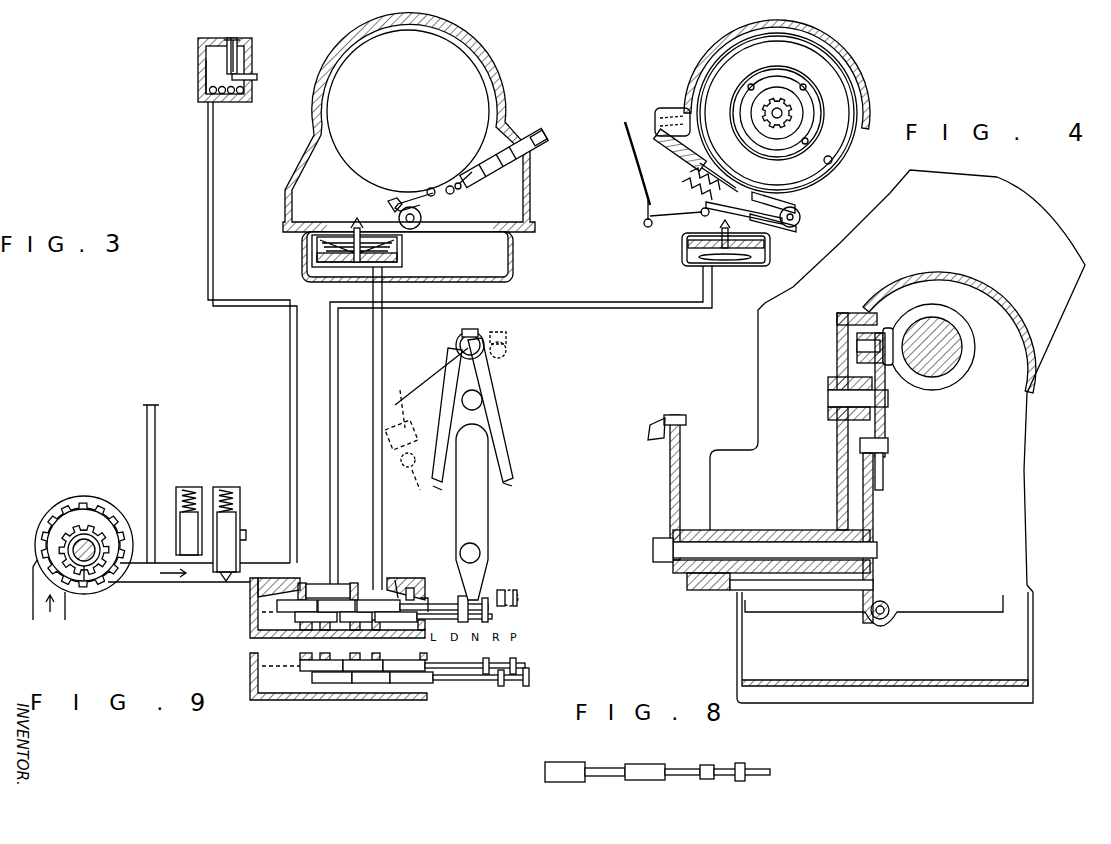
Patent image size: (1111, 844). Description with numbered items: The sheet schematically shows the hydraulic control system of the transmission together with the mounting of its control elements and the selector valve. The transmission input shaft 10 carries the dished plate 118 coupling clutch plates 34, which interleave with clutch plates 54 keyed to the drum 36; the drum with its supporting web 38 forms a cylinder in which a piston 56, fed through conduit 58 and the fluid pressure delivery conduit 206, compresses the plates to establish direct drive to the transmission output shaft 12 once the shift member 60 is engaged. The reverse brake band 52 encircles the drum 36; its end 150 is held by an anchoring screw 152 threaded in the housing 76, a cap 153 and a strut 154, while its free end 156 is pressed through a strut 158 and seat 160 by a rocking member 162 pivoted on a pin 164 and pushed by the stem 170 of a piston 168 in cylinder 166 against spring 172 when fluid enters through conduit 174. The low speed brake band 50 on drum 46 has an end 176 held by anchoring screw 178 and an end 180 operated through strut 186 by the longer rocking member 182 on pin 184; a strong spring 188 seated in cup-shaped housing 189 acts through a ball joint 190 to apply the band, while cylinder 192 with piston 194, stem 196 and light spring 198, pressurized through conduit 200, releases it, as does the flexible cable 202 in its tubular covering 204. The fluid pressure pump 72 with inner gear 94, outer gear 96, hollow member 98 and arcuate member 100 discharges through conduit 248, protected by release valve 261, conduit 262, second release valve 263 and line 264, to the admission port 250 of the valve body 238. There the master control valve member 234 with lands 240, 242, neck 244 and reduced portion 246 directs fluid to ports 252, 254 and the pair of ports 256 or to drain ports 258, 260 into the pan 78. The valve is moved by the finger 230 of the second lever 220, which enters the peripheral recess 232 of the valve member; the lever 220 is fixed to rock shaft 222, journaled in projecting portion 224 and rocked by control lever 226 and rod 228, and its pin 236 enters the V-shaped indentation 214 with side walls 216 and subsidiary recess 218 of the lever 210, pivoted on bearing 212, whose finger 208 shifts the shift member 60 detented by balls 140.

In FIG. 9, the transmission input shaft 10 is at (106, 572).
In FIG. 4, the transmission output shaft 12 is at (786, 108).
In FIG. 8, the transmission output shaft 12 is at (948, 336).
In FIG. 3, the clutch plates 34 is at (238, 68).
In FIG. 3, the drum 36 is at (236, 40).
In FIG. 3, the supporting web 38 is at (200, 86).
In FIG. 4, the drum 46 is at (832, 162).
In FIG. 4, the low speed brake band 50 is at (858, 150).
In FIG. 3, the reverse brake band 52 is at (478, 72).
In FIG. 3, the clutch plates 54 is at (238, 58).
In FIG. 3, the piston 56 is at (200, 62).
In FIG. 3, the conduit 58 is at (212, 102).
In FIG. 8, the shift member 60 is at (958, 376).
In FIG. 9, the fluid pressure pump 72 is at (85, 496).
In FIG. 3, the housing 76 is at (503, 98).
In FIG. 4, the housing 76 is at (703, 64).
In FIG. 8, the housing 76 is at (968, 280).
In FIG. 3, the pan 78 is at (514, 276).
In FIG. 8, the pan 78 is at (896, 702).
In FIG. 9, the inner externally toothed gear 94 is at (96, 530).
In FIG. 9, the outer internally toothed gear 96 is at (48, 524).
In FIG. 9, the hollow member 98 is at (84, 582).
In FIG. 9, the arcuate member 100 is at (70, 510).
In FIG. 3, the dished plate 118 is at (257, 80).
In FIG. 4, the balls 140 is at (770, 80).
In FIG. 3, the end of brake band 150 is at (450, 185).
In FIG. 3, the anchoring screw 152 is at (520, 142).
In FIG. 3, the cap 153 is at (474, 175).
In FIG. 3, the strut 154 is at (461, 190).
In FIG. 3, the free end of brake band 156 is at (429, 190).
In FIG. 3, the strut 158 is at (420, 203).
In FIG. 3, the seat 160 is at (390, 202).
In FIG. 3, the rocking member 162 is at (360, 224).
In FIG. 3, the pin 164 is at (411, 229).
In FIG. 3, the cylinder 166 is at (313, 262).
In FIG. 3, the piston 168 is at (398, 256).
In FIG. 3, the stem 170 is at (354, 262).
In FIG. 3, the spring 172 is at (330, 245).
In FIG. 3, the conduit 174 is at (384, 296).
In FIG. 4, the end of brake band 176 is at (730, 182).
In FIG. 4, the anchoring screw 178 is at (700, 156).
In FIG. 4, the end of brake band 180 is at (768, 200).
In FIG. 4, the rocking member 182 is at (772, 226).
In FIG. 4, the pin 184 is at (800, 217).
In FIG. 4, the strut 186 is at (766, 208).
In FIG. 4, the spring 188 is at (682, 188).
In FIG. 4, the cup-shaped housing 189 is at (668, 115).
In FIG. 4, the ball joint 190 is at (690, 214).
In FIG. 4, the cylinder 192 is at (740, 264).
In FIG. 4, the piston 194 is at (688, 242).
In FIG. 4, the stem 196 is at (722, 230).
In FIG. 4, the spring 198 is at (700, 256).
In FIG. 4, the conduit 200 is at (635, 308).
In FIG. 4, the flexible cable 202 is at (645, 206).
In FIG. 4, the tubular covering 204 is at (636, 152).
In FIG. 3, the fluid pressure delivery conduit 206 is at (208, 205).
In FIG. 8, the finger 208 is at (886, 328).
In FIG. 9, the finger 208 is at (508, 350).
In FIG. 8, the lever 210 is at (886, 428).
In FIG. 9, the lever 210 is at (494, 383).
In FIG. 8, the bearing 212 is at (890, 400).
In FIG. 9, the bearing 212 is at (484, 400).
In FIG. 9, the V-shaped indentation 214 is at (500, 480).
In FIG. 8, the side walls 216 is at (884, 476).
In FIG. 9, the side walls 216 is at (432, 490).
In FIG. 9, the subsidiary recess 218 is at (500, 432).
In FIG. 8, the second lever 220 is at (874, 516).
In FIG. 9, the second lever 220 is at (492, 535).
In FIG. 8, the rock shaft 222 is at (796, 548).
In FIG. 9, the rock shaft 222 is at (481, 553).
In FIG. 8, the projecting portion 224 is at (766, 532).
In FIG. 8, the control lever 226 is at (668, 470).
In FIG. 8, the rod 228 is at (660, 430).
In FIG. 8, the finger 230 is at (882, 588).
In FIG. 9, the finger 230 is at (518, 598).
In FIG. 9, the peripheral recess 232 is at (742, 782).
In FIG. 8, the master control valve member 234 is at (886, 618).
In FIG. 9, the master control valve member 234 is at (725, 757).
In FIG. 8, the pin 236 is at (890, 448).
In FIG. 9, the pin 236 is at (468, 466).
In FIG. 8, the valve body 238 is at (832, 604).
In FIG. 9, the valve body 238 is at (250, 638).
In FIG. 9, the land 240 is at (565, 784).
In FIG. 9, the land 242 is at (658, 795).
In FIG. 9, the neck 244 is at (605, 795).
In FIG. 9, the second reduced portion 246 is at (707, 780).
In FIG. 9, the discharge conduit 248 is at (266, 564).
In FIG. 9, the admission port 250 is at (328, 619).
In FIG. 9, the port 252 is at (262, 692).
In FIG. 9, the port 254 is at (398, 660).
In FIG. 9, the ports 256 is at (375, 656).
In FIG. 9, the drain port 258 is at (252, 618).
In FIG. 9, the drain port 260 is at (428, 690).
In FIG. 9, the release valve 261 is at (241, 530).
In FIG. 9, the conduit 262 is at (146, 440).
In FIG. 9, the second release valve 263 is at (220, 510).
In FIG. 9, the line 264 is at (178, 500).